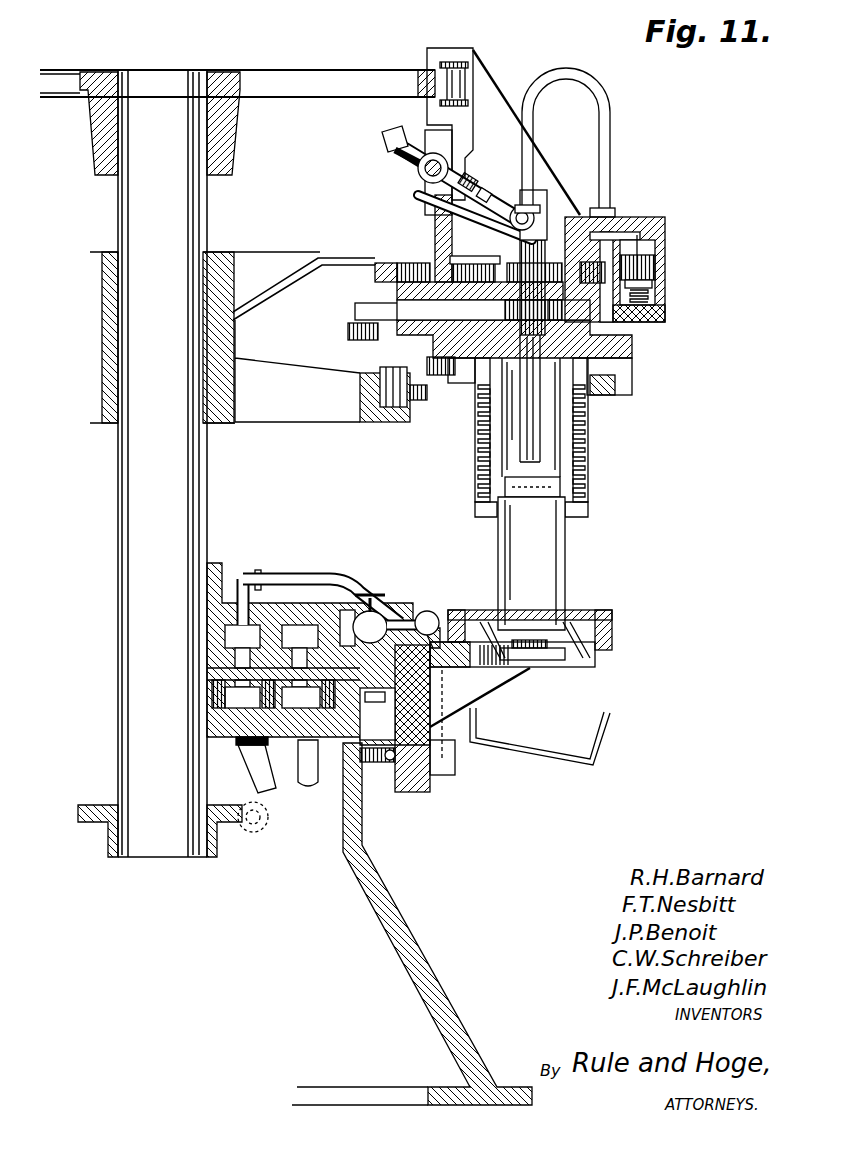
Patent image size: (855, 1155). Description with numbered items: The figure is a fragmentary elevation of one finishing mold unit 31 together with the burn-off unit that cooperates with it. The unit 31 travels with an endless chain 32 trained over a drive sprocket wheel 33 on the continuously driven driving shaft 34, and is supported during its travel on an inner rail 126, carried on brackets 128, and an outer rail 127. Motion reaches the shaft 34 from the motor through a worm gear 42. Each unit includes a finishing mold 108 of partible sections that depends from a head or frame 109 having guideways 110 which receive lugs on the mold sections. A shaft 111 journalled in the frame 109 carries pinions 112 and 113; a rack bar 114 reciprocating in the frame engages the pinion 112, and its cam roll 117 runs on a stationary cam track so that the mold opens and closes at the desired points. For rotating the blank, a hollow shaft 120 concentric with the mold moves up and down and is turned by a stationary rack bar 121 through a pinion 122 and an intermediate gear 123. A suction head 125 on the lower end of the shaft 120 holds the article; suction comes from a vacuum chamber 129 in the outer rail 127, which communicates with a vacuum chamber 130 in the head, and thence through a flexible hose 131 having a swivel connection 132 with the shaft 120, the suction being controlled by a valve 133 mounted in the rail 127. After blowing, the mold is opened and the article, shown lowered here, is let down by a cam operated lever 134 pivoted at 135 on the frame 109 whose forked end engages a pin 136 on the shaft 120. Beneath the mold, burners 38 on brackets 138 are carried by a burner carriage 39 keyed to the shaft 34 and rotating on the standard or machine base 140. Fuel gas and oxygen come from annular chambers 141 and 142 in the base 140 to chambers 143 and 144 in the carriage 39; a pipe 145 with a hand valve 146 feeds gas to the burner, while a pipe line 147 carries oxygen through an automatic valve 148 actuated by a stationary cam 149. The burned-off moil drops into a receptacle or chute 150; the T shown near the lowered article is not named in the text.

The finishing mold unit 31 is at (681, 319).
The endless chain 32 is at (460, 50).
The drive sprocket wheel 33 is at (373, 80).
The driving shaft 34 is at (205, 222).
The burner 38 is at (626, 637).
The burner carriage 39 is at (298, 600).
The worm gear 42 is at (242, 832).
The finishing mold 108 is at (590, 456).
The head or frame 109 is at (633, 356).
The guideways 110 is at (615, 392).
The shaft 111 is at (520, 328).
The pinion 112 is at (564, 310).
The pinion 113 is at (580, 328).
The rack bar 114 is at (378, 310).
The cam roll 117 is at (348, 333).
The shaft 120 is at (540, 432).
The stationary rack bar 121 is at (380, 262).
The pinion 122 is at (420, 262).
The intermediate gear 123 is at (460, 262).
The suction head 125 is at (560, 488).
The inner rail 126 is at (382, 423).
The outer rail 127 is at (660, 282).
The bracket 128 is at (330, 418).
The vacuum chamber 129 is at (655, 296).
The vacuum chamber 130 is at (640, 232).
The flexible hose 131 is at (606, 140).
The swivel connection 132 is at (548, 212).
The valve 133 is at (648, 270).
The cam operated lever 134 is at (395, 152).
The pivot 135 is at (425, 172).
The pin 136 is at (553, 225).
The bracket 138 is at (465, 688).
The standard or machine base 140 is at (362, 847).
The annular chamber 141 is at (300, 780).
The annular chamber 142 is at (240, 703).
The chamber 143 is at (300, 633).
The chamber 144 is at (228, 625).
The pipe 145 is at (408, 627).
The hand valve 146 is at (375, 622).
The pipe line 147 is at (278, 577).
The automatic valve 148 is at (455, 760).
The stationary cam 149 is at (385, 765).
The receptacle or chute 150 is at (600, 730).
The tube T is at (560, 572).